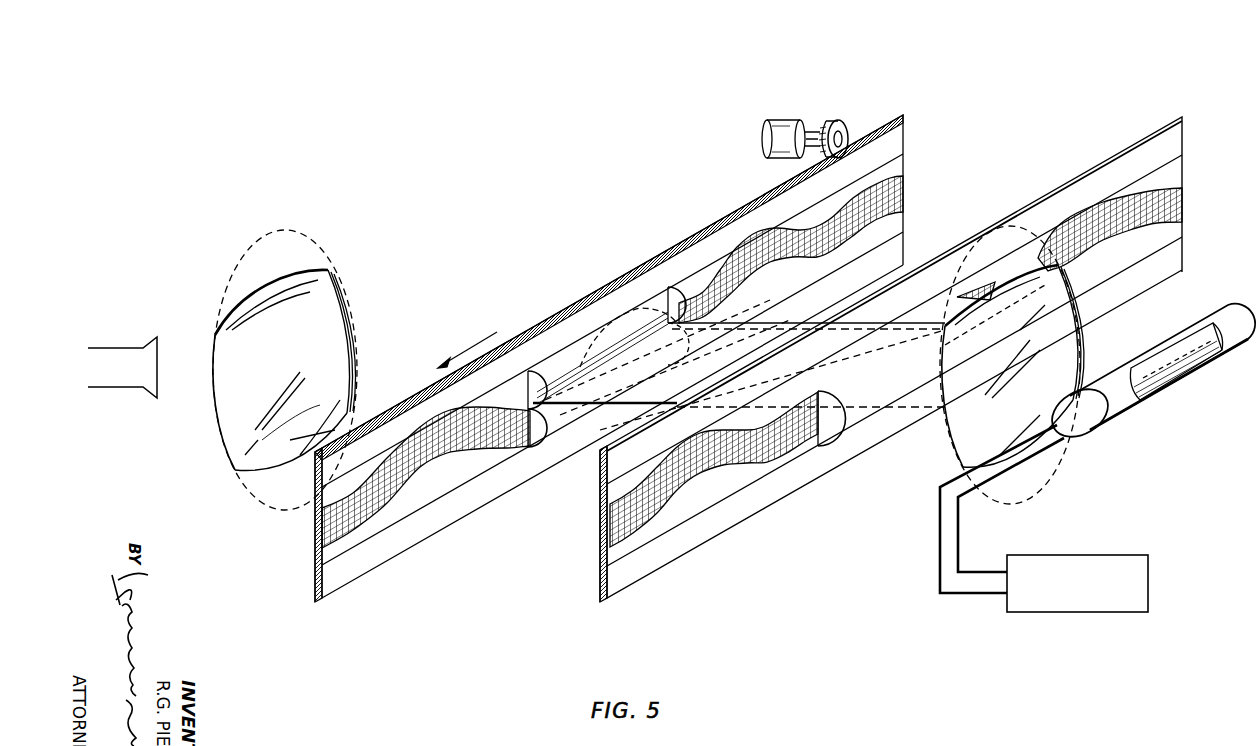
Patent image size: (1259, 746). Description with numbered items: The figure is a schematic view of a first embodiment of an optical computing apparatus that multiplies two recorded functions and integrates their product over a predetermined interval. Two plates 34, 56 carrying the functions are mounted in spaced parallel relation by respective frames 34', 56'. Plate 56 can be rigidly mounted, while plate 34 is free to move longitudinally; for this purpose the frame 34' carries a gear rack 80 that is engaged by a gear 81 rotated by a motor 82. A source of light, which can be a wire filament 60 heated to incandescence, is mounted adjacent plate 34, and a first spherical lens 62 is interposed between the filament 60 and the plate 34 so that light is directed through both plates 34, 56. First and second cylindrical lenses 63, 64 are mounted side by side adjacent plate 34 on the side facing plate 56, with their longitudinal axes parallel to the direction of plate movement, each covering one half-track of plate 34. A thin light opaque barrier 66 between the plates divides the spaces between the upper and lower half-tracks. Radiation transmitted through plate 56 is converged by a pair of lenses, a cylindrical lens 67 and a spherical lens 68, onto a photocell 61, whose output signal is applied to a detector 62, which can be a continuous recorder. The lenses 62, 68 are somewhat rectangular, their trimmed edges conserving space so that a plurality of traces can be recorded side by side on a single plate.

The plate 34 is at (812, 236).
The frame 34' is at (633, 299).
The plate 56 is at (867, 359).
The frame 56' is at (580, 524).
The wire filament 60 is at (160, 340).
The photocell 61 is at (1183, 328).
The detector / first spherical lens 62 is at (340, 285).
The first cylindrical lens 63 is at (545, 360).
The second cylindrical lens 64 is at (550, 432).
The light opaque barrier 66 is at (773, 323).
The cylindrical lens 67 is at (890, 420).
The spherical lens 68 is at (1082, 362).
The gear rack 80 is at (773, 197).
The gear 81 is at (843, 118).
The motor 82 is at (808, 118).